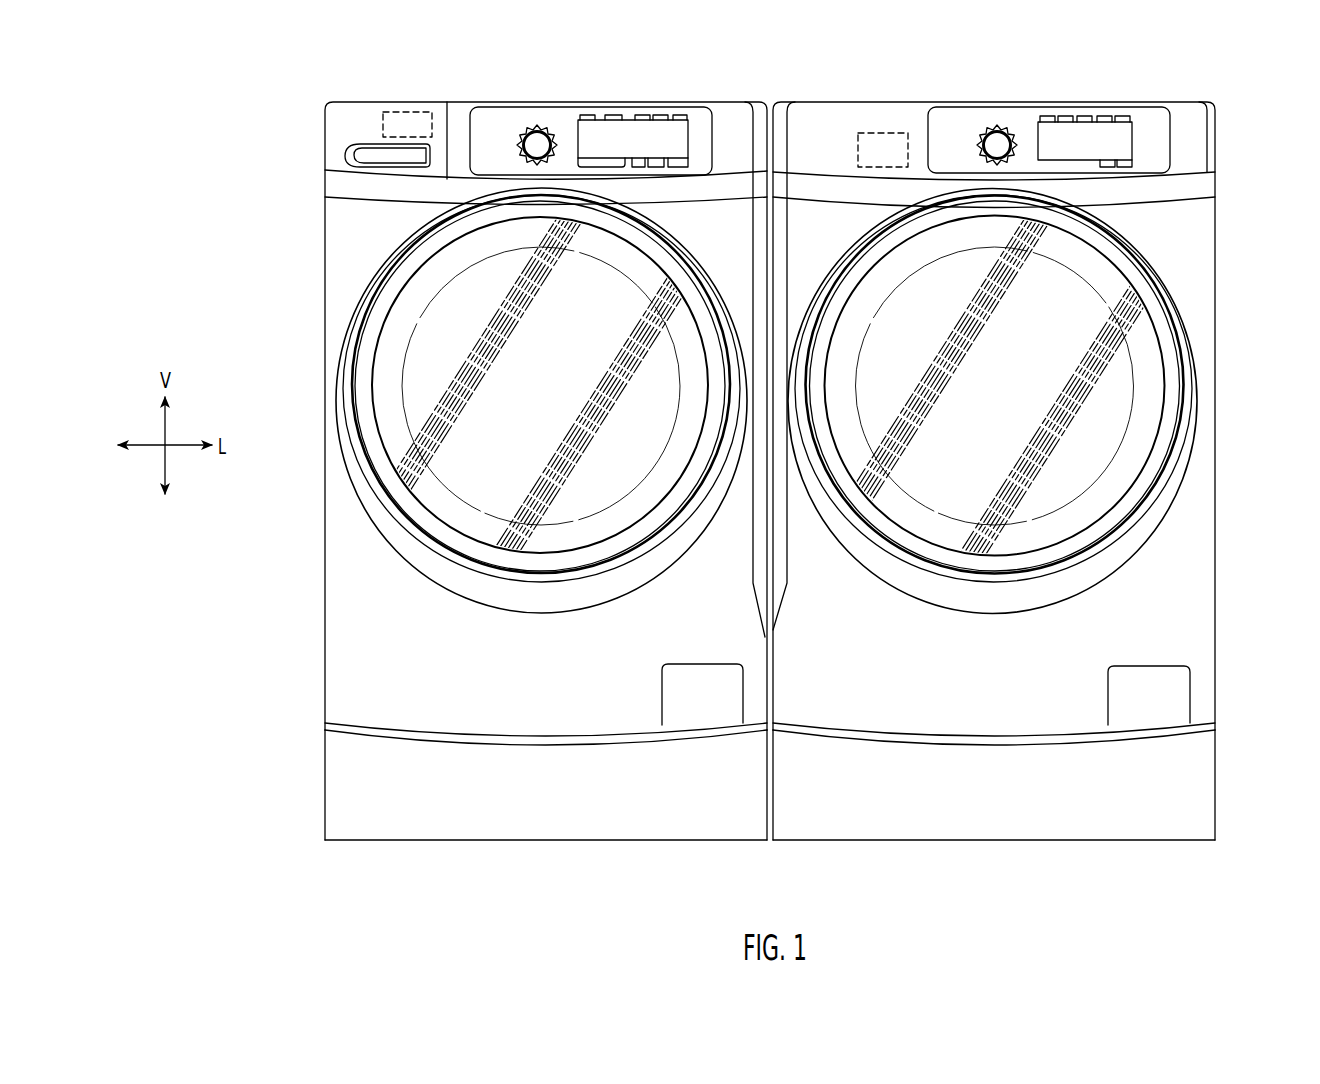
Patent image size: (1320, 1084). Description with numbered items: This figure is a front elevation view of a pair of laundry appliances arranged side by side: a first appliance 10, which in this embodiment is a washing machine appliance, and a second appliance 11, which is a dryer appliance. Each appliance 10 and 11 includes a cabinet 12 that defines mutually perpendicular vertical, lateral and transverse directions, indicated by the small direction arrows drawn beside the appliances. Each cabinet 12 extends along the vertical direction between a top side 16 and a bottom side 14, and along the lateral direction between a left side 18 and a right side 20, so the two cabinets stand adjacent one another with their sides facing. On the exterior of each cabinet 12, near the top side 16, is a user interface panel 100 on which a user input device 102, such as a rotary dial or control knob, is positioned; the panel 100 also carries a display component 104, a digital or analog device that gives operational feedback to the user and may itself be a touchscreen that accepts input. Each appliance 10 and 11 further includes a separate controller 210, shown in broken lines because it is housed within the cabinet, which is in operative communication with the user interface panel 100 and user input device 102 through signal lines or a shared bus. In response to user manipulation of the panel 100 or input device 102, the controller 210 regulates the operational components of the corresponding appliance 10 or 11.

The first appliance 10 is at (302, 92).
The second appliance 11 is at (1240, 138).
The cabinet 12 is at (347, 628).
The bottom side 14 is at (400, 843).
The top side 16 is at (377, 93).
The left side 18 is at (322, 777).
The right side 20 is at (762, 849).
The user interface panel 100 is at (567, 115).
The user input device 102 is at (537, 138).
The display component 104 is at (655, 137).
The controller 210 is at (414, 106).